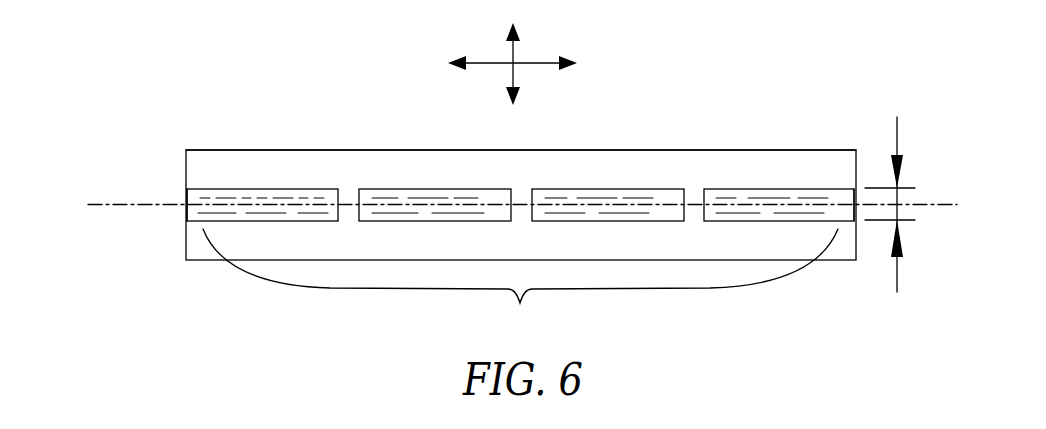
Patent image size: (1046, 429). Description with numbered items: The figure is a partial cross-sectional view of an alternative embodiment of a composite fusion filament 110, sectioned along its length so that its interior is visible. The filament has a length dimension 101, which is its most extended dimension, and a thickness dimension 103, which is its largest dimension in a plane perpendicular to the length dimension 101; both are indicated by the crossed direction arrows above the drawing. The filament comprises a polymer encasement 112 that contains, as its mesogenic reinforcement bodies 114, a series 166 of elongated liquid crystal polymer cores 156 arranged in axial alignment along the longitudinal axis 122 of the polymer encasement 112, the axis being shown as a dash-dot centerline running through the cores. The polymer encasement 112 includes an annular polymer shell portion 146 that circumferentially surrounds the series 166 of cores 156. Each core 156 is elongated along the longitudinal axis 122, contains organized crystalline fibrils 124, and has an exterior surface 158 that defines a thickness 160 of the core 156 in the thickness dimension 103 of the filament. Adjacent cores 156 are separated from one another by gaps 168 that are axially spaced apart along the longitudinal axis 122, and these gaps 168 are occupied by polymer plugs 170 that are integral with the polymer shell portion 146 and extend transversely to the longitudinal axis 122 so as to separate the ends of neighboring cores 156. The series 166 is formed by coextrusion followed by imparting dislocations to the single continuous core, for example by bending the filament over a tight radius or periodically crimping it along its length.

The length dimension 101 is at (539, 62).
The thickness dimension 103 is at (513, 74).
The composite fusion filament 110 is at (140, 163).
The polymer encasement 112 is at (240, 150).
The mesogenic reinforcement bodies 114 is at (182, 210).
The longitudinal axis 122 is at (108, 205).
The organized crystalline fibrils 124 is at (295, 198).
The annular polymer shell portion 146 is at (276, 157).
The elongated liquid crystal polymer core 156 is at (209, 204).
The exterior surface 158 is at (196, 188).
The thickness 160 is at (897, 200).
The series of elongated liquid crystal polymer cores 166 is at (520, 284).
The gaps 168 is at (343, 201).
The polymer plugs 170 is at (348, 198).